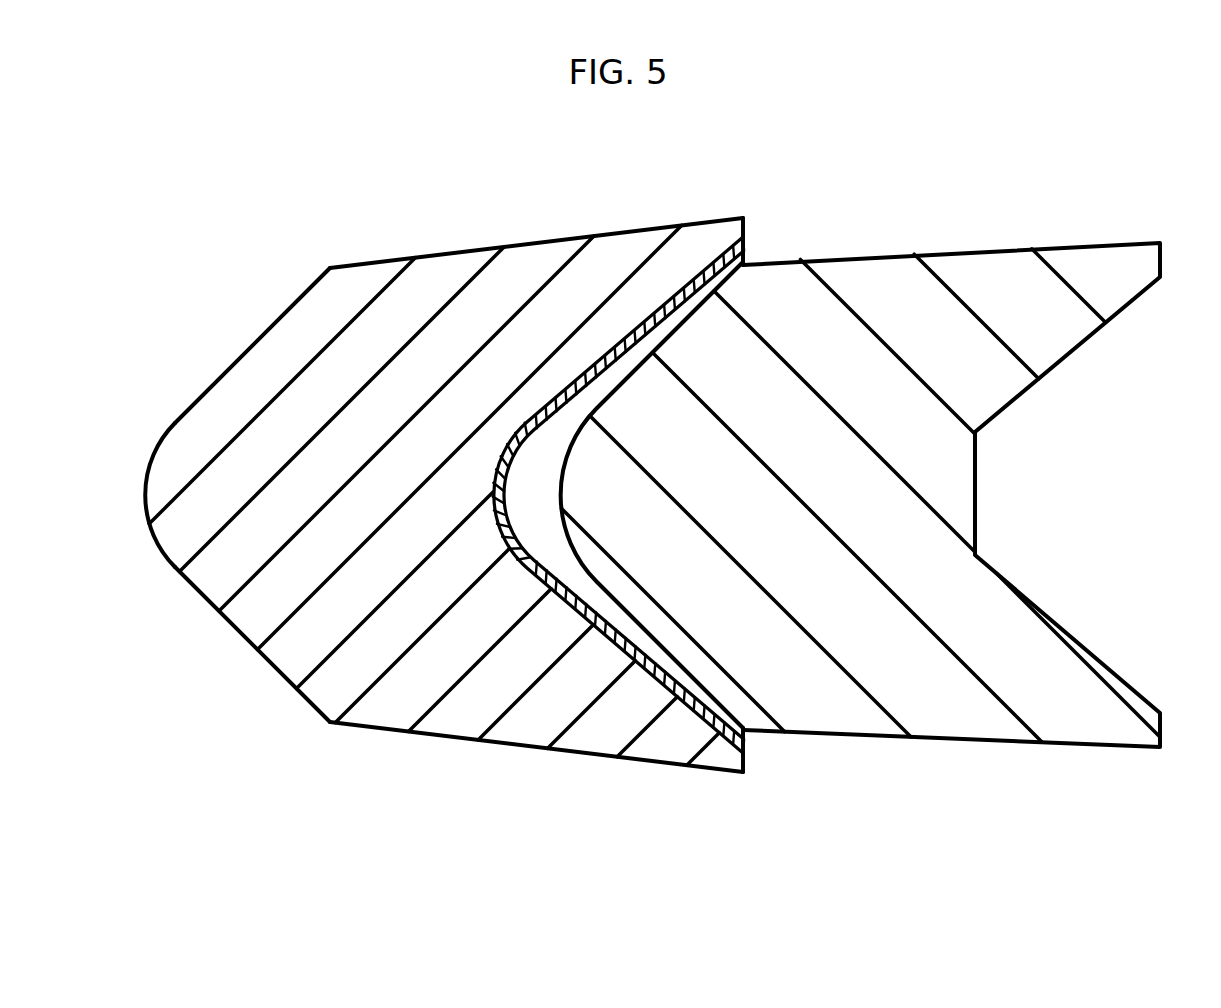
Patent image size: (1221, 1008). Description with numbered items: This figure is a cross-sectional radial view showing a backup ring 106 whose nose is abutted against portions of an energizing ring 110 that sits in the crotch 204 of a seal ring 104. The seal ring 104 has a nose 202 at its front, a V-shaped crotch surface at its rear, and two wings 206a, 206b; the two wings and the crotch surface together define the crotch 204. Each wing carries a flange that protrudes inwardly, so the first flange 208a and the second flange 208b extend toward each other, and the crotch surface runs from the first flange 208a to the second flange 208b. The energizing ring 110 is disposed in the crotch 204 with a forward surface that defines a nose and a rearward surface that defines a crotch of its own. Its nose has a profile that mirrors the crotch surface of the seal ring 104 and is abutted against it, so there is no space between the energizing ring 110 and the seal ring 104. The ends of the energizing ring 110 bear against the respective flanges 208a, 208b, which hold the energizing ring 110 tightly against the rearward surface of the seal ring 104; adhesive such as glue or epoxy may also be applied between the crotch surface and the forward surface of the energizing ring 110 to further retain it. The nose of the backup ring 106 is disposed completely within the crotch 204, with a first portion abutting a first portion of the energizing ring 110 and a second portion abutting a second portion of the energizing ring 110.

The seal ring 104 is at (357, 264).
The backup ring 106 is at (990, 262).
The energizing ring 110 is at (608, 372).
The nose 202 is at (170, 424).
The crotch 204 is at (535, 491).
The first wing 206a is at (571, 242).
The second wing 206b is at (444, 738).
The first flange 208a is at (750, 258).
The second flange 208b is at (740, 734).